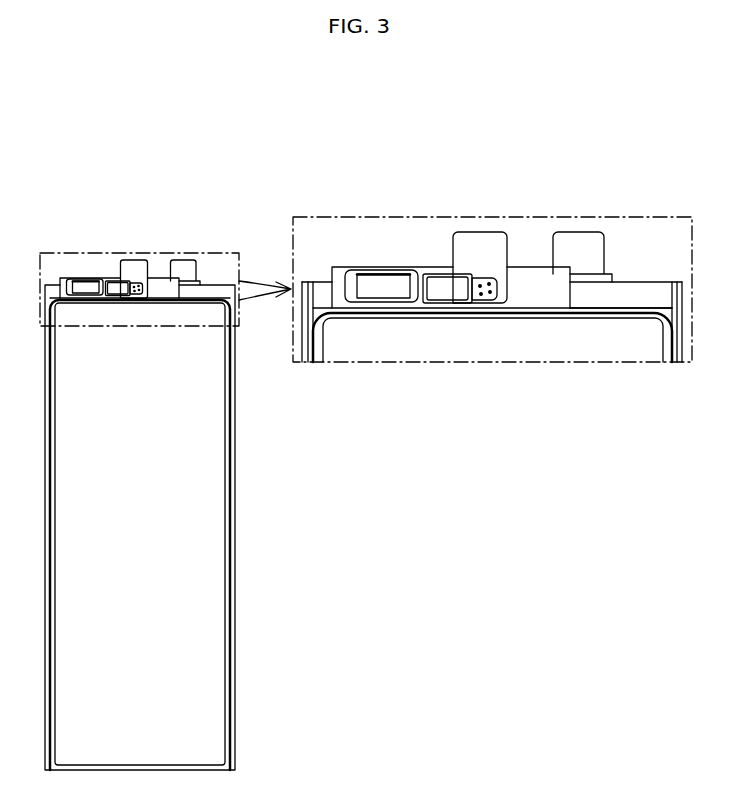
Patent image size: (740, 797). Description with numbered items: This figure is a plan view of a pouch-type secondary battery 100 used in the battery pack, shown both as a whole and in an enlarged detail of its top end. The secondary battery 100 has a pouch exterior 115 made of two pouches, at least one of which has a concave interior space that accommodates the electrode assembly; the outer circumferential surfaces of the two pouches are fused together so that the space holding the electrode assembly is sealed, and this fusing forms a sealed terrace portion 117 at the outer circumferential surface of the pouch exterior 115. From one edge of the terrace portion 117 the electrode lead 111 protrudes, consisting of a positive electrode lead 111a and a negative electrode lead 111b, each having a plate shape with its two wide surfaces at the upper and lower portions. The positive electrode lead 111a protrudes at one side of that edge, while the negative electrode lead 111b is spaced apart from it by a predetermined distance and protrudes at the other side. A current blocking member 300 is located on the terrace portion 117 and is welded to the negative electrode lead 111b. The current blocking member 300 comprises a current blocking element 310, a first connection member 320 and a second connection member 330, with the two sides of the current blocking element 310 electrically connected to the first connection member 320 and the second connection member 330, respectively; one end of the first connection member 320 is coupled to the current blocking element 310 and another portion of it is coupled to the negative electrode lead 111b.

The secondary battery 100 is at (53, 240).
The pouch exterior 115 is at (202, 510).
The terrace portion 117 is at (645, 295).
The electrode lead 111 is at (377, 175).
The positive electrode lead 111a is at (577, 232).
The negative electrode lead 111b is at (387, 267).
The current blocking member 300 is at (495, 114).
The current blocking element 310 is at (447, 285).
The first connection member 320 is at (353, 288).
The second connection member 330 is at (481, 232).